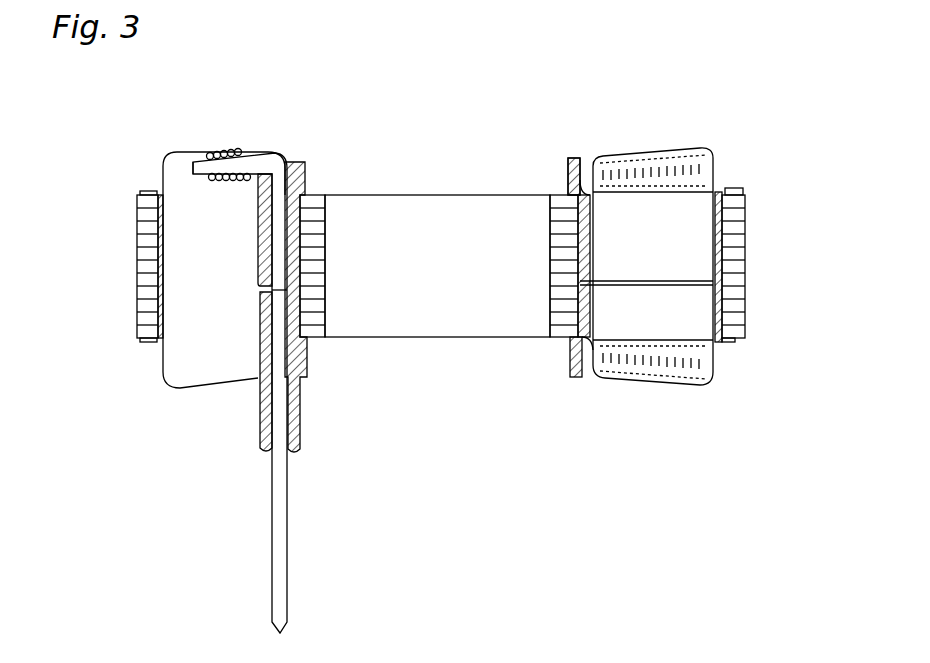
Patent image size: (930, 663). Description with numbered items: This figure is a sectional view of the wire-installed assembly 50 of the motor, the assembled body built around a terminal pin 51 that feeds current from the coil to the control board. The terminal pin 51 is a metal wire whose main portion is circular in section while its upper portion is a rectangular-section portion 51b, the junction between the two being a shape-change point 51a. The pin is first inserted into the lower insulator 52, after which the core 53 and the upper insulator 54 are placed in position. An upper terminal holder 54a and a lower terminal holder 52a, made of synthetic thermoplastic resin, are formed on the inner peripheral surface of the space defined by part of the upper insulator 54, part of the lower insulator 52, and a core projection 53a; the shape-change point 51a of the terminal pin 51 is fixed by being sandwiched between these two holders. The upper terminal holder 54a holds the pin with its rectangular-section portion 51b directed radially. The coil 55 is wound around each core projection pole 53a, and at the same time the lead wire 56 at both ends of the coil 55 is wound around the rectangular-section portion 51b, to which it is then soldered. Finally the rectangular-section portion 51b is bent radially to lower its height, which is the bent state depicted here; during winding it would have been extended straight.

The wire-installed assembly 50 is at (676, 433).
The terminal pin 51 is at (283, 502).
The shape-change point 51a is at (280, 291).
The rectangular-section portion 51b is at (193, 171).
The lower insulator 52 is at (577, 378).
The lower terminal holder 52a is at (260, 412).
The core 53 is at (560, 196).
The core projection 53a is at (135, 338).
The upper insulator 54 is at (573, 157).
The upper terminal holder 54a is at (295, 162).
The coil 55 is at (178, 160).
The lead wire 56 is at (228, 152).